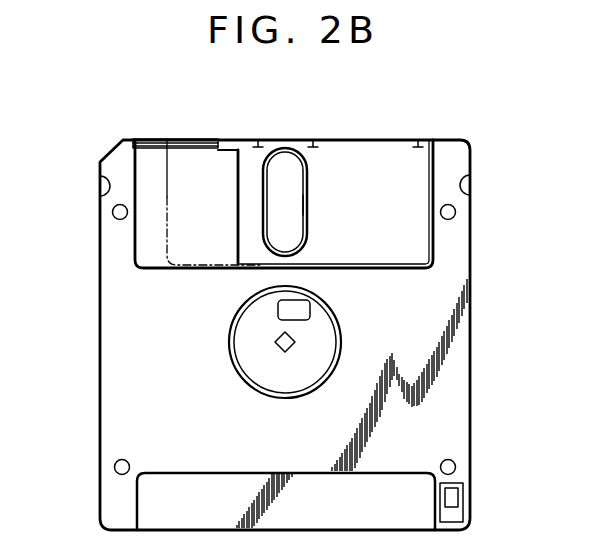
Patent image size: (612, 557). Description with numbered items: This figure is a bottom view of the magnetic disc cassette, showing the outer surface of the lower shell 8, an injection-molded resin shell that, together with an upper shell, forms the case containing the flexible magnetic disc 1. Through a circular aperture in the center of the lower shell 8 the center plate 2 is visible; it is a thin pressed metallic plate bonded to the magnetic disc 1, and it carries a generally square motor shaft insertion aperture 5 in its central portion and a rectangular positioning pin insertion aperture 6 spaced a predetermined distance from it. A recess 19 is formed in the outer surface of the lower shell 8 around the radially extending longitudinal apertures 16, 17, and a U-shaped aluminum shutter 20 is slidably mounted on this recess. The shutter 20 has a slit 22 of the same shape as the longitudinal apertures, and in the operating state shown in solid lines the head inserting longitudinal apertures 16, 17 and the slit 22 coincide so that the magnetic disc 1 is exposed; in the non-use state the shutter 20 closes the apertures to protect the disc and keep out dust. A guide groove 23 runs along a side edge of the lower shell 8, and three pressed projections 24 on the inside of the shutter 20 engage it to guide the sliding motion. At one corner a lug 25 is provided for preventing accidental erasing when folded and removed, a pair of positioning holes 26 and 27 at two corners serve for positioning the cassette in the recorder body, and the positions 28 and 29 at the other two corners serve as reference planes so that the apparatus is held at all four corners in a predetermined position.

The flexible magnetic disc 1 is at (266, 158).
The center plate 2 is at (330, 338).
The motor shaft insertion aperture 5 is at (277, 342).
The positioning pin insertion aperture 6 is at (304, 303).
The lower shell 8 is at (457, 258).
The longitudinal aperture 16 is at (283, 158).
The longitudinal aperture 17 is at (283, 150).
The recess 19 is at (190, 160).
The shutter 20 is at (357, 155).
The slit 22 is at (298, 205).
The guide groove 23 is at (152, 145).
The projections 24 is at (258, 147).
The lug 25 is at (455, 500).
The positioning hole 26 is at (455, 213).
The positioning hole 27 is at (113, 212).
The reference plane position 28 is at (456, 467).
The reference plane position 29 is at (115, 467).